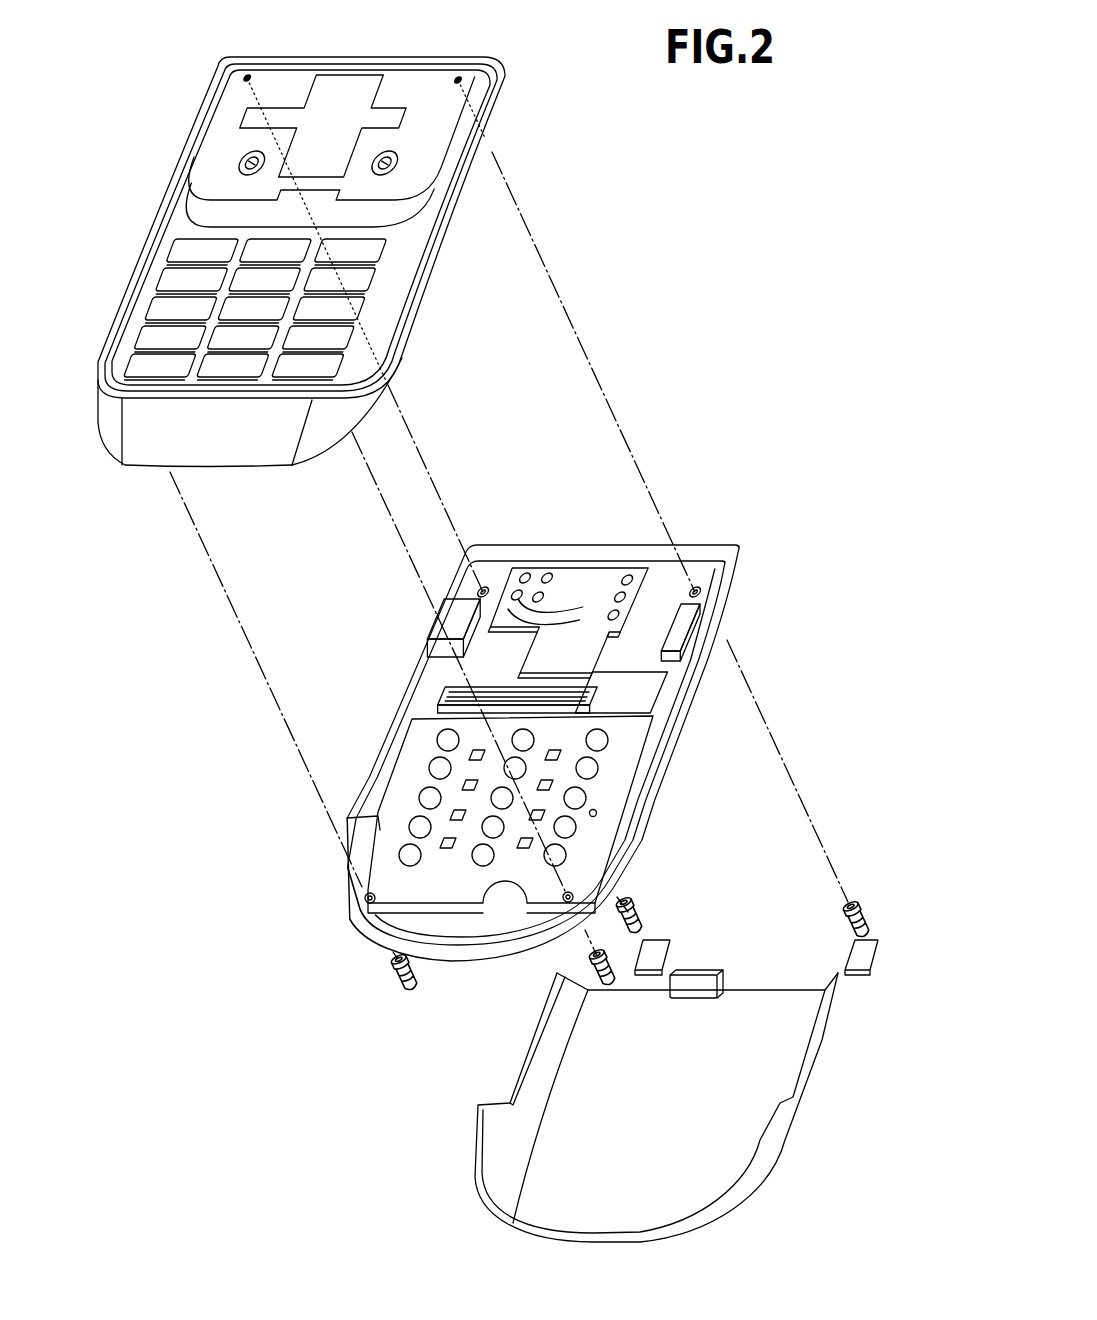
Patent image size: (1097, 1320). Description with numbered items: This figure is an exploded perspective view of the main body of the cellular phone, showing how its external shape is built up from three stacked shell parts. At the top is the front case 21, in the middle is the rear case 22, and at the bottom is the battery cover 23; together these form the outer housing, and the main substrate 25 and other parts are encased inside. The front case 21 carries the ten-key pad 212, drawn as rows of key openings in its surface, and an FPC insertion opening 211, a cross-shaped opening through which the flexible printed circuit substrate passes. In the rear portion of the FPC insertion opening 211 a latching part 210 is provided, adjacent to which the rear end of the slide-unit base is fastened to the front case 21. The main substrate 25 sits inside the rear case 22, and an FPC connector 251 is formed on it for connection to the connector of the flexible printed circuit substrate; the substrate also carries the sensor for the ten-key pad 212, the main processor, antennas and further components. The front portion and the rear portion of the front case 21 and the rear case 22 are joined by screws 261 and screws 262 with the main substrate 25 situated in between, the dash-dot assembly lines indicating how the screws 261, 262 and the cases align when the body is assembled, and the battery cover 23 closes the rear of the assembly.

The front case 21 is at (497, 95).
The latching part 210 is at (302, 200).
The FPC insertion opening 211 is at (347, 97).
The ten-key pad 212 is at (125, 363).
The rear case 22 is at (742, 575).
The main substrate 25 is at (673, 693).
The FPC connector 251 is at (455, 687).
The screws 261 is at (638, 922).
The screws 262 is at (397, 980).
The battery cover 23 is at (768, 1152).